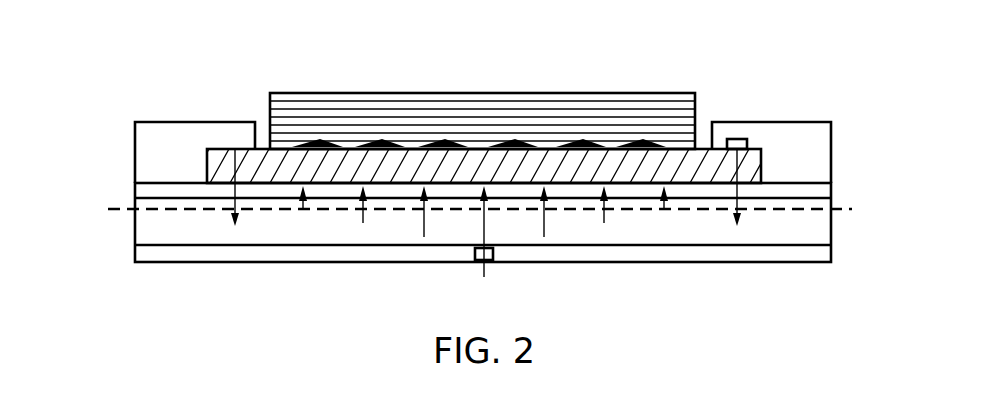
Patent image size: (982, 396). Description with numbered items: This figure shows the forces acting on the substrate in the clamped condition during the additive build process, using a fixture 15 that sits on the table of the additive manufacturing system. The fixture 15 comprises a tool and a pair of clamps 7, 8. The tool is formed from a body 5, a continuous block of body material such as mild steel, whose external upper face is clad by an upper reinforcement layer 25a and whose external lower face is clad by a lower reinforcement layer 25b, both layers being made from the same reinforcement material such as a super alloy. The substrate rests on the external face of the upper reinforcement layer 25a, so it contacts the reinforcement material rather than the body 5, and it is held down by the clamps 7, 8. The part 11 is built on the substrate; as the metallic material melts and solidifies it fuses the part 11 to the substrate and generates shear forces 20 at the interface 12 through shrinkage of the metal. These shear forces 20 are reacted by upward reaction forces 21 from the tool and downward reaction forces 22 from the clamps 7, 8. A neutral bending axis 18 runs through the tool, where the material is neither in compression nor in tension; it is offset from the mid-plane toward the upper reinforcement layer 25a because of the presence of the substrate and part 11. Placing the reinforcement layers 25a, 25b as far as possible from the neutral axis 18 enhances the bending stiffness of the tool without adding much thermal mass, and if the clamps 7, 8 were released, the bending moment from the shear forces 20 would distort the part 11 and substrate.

The body 5 is at (135, 218).
The clamp 7 is at (135, 149).
The clamp 8 is at (783, 122).
The part 11 is at (270, 95).
The interface 12 is at (484, 150).
The fixture 15 is at (94, 211).
The neutral bending axis 18 is at (130, 208).
The shear forces 20 is at (320, 140).
The upward reaction forces 21 is at (472, 261).
The downward reaction forces 22 is at (232, 208).
The upper reinforcement layer 25a is at (826, 192).
The lower reinforcement layer 25b is at (826, 256).